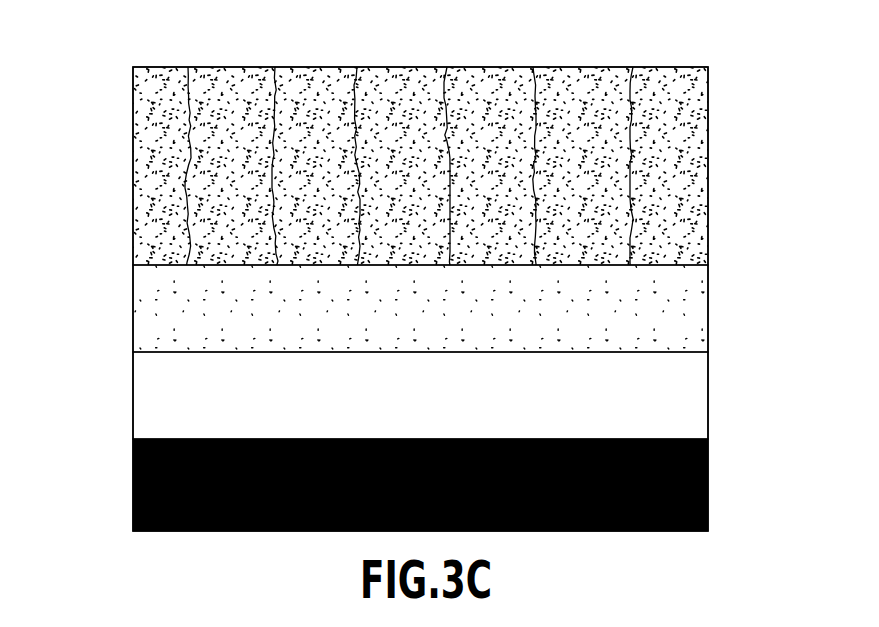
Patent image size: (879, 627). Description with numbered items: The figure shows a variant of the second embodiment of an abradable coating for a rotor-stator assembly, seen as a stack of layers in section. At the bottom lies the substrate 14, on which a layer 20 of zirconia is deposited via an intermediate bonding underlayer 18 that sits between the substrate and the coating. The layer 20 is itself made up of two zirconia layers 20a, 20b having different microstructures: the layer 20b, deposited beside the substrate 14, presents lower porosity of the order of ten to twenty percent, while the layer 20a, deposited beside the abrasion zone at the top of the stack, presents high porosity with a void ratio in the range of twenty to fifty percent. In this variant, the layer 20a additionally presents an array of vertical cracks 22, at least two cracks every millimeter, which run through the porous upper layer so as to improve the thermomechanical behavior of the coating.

The substrate 14 is at (653, 491).
The intermediate bonding underlayer 18 is at (650, 396).
The layer 20 is at (368, 209).
The layer deposited beside the abrasion zone 20a is at (135, 189).
The layer deposited beside the substrate 20b is at (389, 296).
The vertical cracks 22 is at (273, 100).